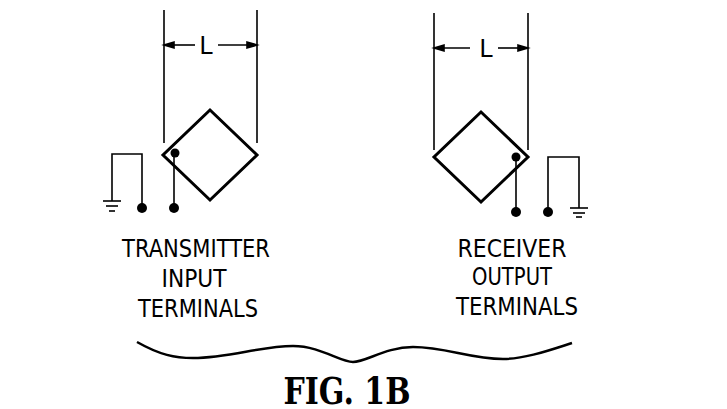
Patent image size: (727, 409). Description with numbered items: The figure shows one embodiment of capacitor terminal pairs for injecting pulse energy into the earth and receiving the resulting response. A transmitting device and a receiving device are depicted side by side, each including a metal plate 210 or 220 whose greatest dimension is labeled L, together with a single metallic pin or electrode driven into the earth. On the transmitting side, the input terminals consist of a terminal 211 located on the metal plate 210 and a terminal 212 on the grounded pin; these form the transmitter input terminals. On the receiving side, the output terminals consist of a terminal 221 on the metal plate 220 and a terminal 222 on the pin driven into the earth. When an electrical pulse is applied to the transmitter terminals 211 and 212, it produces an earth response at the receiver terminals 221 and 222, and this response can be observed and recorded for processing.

The metal plate 210 is at (166, 109).
The terminal 211 is at (127, 141).
The terminal 212 is at (103, 159).
The metal plate 220 is at (456, 186).
The terminal 221 is at (564, 139).
The terminal 222 is at (596, 167).